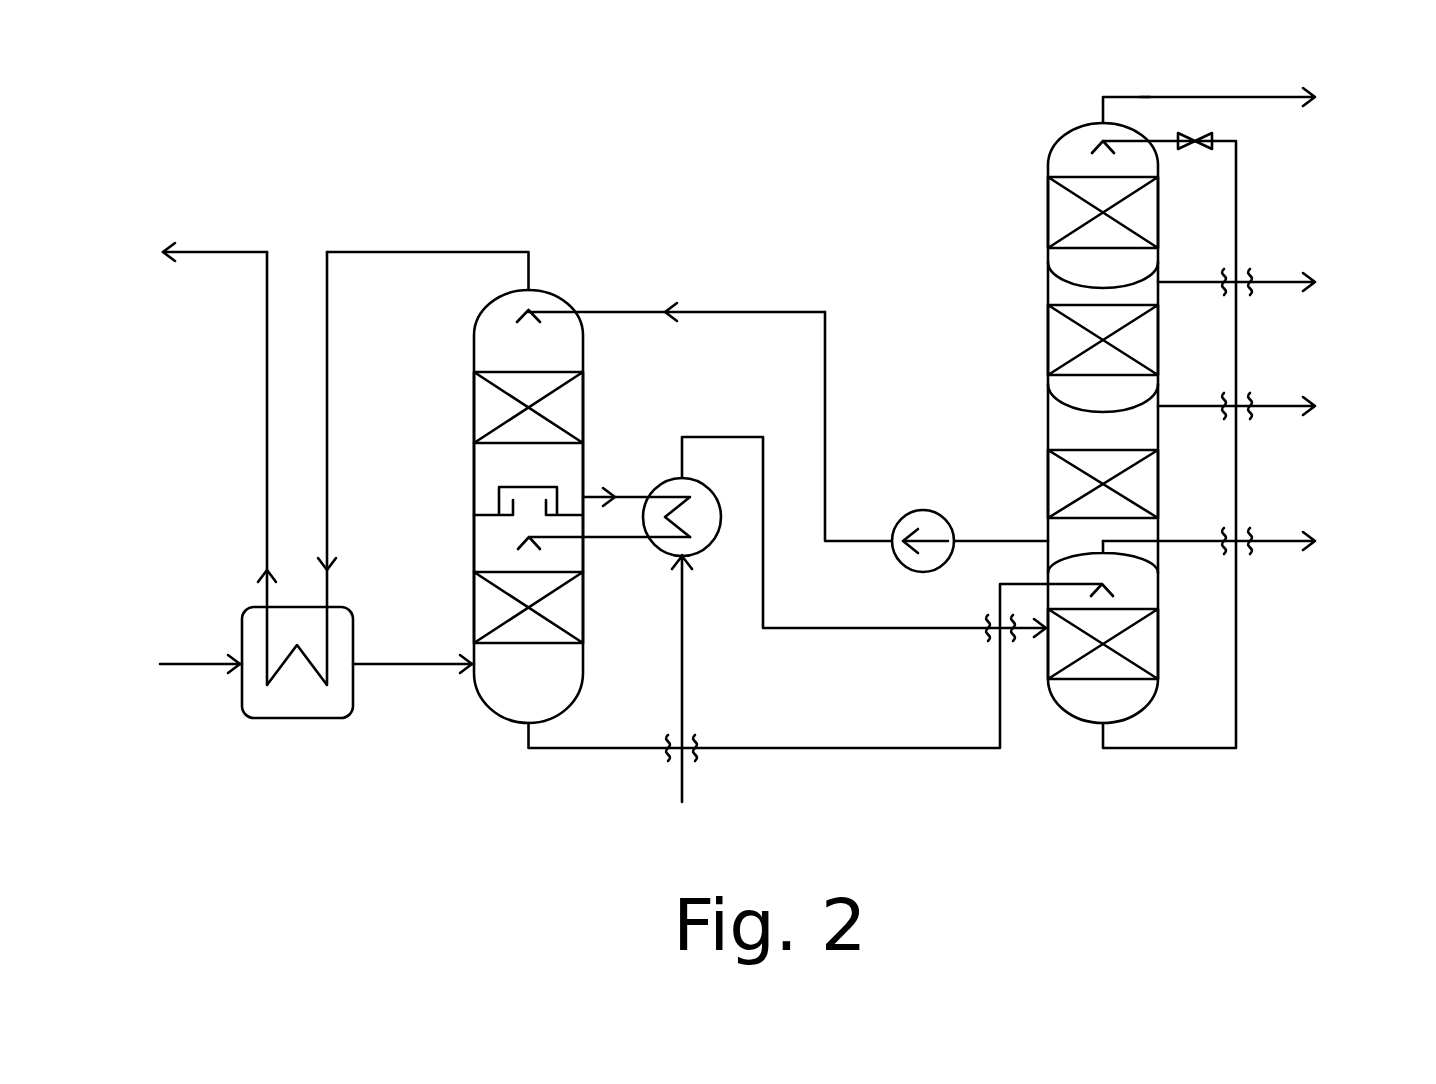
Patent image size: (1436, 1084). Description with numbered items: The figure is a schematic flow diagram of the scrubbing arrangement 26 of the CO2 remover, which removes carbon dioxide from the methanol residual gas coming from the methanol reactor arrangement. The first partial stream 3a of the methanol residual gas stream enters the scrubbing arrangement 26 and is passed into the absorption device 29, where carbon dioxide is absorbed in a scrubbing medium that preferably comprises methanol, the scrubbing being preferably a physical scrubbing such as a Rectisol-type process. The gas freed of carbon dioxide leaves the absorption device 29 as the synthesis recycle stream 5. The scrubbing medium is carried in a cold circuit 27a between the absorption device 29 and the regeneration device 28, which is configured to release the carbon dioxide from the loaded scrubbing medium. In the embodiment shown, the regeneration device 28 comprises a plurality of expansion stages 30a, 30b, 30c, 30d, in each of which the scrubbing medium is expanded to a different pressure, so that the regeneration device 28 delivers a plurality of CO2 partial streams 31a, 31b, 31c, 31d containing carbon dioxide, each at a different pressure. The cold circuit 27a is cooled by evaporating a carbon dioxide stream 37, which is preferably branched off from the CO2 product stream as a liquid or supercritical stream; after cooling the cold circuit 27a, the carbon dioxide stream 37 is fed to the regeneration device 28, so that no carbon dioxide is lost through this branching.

The synthesis recycle stream 5 is at (267, 344).
The first partial stream 3a is at (200, 670).
The scrubbing arrangement 26 is at (540, 785).
The absorption device 29 is at (464, 454).
The cold circuit 27a is at (725, 311).
The carbon dioxide stream 37 is at (684, 686).
The regeneration device 28 is at (1034, 398).
The expansion stage 30a is at (1068, 646).
The expansion stage 30b is at (1071, 487).
The expansion stage 30c is at (1070, 340).
The expansion stage 30d is at (1066, 212).
The CO2 partial stream 31a is at (1270, 543).
The CO2 partial stream 31b is at (1270, 408).
The CO2 partial stream 31c is at (1270, 284).
The CO2 partial stream 31d is at (1146, 96).